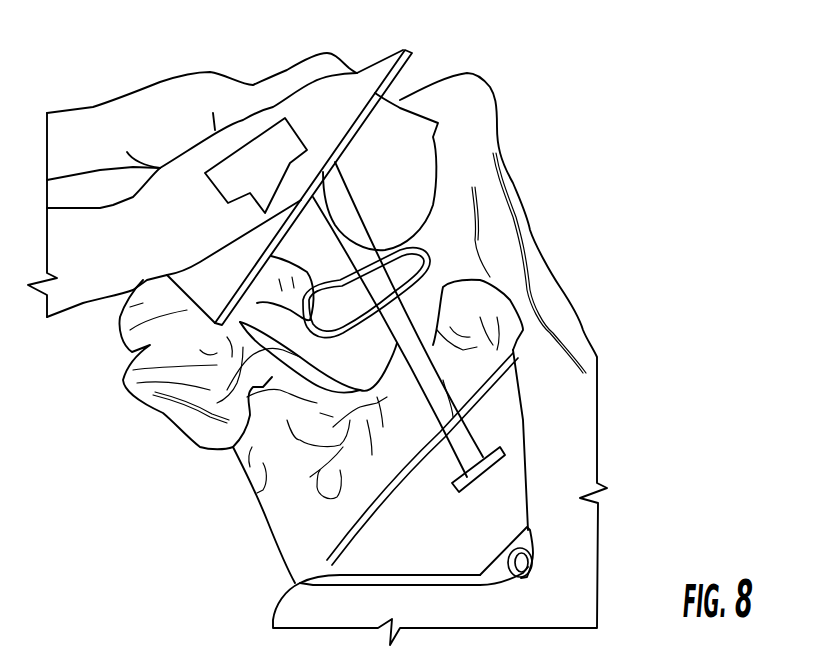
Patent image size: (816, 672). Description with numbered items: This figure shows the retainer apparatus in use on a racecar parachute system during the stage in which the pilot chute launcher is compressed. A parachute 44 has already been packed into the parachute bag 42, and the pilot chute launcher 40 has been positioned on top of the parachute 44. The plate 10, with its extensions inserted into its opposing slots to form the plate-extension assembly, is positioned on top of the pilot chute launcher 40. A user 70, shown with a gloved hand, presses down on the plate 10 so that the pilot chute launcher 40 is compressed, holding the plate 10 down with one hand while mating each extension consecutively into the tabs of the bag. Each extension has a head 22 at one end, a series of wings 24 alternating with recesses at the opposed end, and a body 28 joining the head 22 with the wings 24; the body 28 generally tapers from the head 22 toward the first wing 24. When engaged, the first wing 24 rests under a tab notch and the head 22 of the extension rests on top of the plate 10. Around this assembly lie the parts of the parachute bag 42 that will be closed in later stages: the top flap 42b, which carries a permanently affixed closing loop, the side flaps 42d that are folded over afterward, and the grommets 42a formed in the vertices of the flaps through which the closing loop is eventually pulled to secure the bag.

The plate 10 is at (228, 255).
The head 22 is at (250, 163).
The user 70 is at (295, 102).
The wings 24 is at (497, 455).
The body 28 is at (398, 342).
The pilot chute launcher 40 is at (437, 259).
The parachute bag 42 is at (567, 467).
The grommet 42a is at (530, 565).
The top flap 42b is at (493, 205).
The side flaps 42d is at (513, 512).
The parachute 44 is at (290, 518).